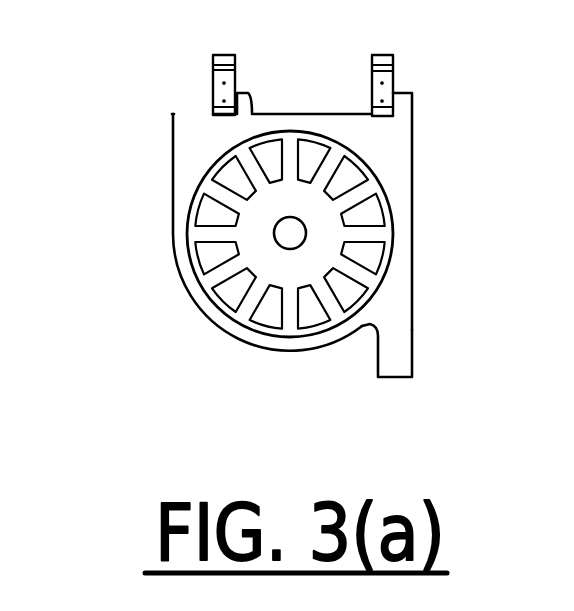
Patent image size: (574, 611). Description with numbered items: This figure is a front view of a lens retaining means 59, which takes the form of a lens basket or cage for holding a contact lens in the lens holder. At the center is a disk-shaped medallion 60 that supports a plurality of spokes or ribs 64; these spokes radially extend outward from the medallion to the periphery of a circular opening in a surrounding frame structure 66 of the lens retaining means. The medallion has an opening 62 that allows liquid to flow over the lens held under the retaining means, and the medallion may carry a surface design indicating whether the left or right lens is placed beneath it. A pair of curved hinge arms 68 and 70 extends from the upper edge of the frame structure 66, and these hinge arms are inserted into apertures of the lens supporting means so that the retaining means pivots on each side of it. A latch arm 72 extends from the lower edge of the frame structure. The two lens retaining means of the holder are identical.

The lens retaining means 59 is at (152, 93).
The disk-shaped medallion 60 is at (277, 267).
The opening 62 is at (274, 236).
The spokes or ribs 64 is at (362, 258).
The frame structure 66 is at (188, 153).
The curved hinge arm 68 is at (213, 72).
The curved hinge arm 70 is at (393, 87).
The latch arm 72 is at (413, 367).